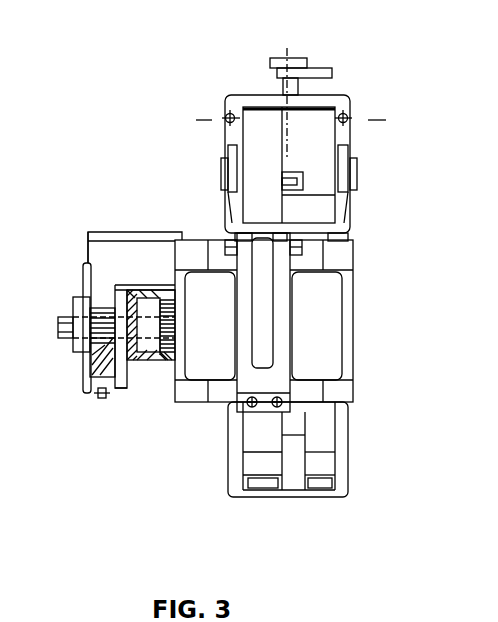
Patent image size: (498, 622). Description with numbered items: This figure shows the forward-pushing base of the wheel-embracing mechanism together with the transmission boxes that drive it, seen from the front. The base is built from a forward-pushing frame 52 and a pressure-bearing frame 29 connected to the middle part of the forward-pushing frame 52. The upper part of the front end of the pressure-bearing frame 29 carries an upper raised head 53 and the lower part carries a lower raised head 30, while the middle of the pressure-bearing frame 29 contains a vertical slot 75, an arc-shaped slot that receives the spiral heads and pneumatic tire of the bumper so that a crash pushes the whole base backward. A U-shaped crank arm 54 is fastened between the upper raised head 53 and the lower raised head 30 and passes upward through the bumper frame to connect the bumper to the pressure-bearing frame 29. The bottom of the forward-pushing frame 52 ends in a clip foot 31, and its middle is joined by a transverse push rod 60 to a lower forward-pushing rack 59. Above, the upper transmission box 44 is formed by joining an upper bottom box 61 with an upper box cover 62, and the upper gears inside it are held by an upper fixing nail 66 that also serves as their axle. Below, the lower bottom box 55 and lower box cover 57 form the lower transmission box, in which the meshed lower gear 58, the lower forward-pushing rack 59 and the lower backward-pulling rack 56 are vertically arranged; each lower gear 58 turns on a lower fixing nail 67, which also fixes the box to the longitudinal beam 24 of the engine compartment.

The upper transmission box 44 is at (258, 95).
The upper fixing nail 66 is at (298, 63).
The upper box cover 62 is at (345, 100).
The upper bottom box 61 is at (343, 138).
The forward-pushing frame 52 is at (323, 208).
The pressure-bearing frame 29 is at (348, 284).
The vertical slot 75 is at (303, 352).
The U-shaped crank arm 54 is at (245, 337).
The upper raised head 53 is at (262, 253).
The lower raised head 30 is at (303, 392).
The clip foot 31 is at (287, 487).
The transverse push rod 60 is at (153, 262).
The lower forward-pushing rack 59 is at (85, 258).
The lower gear 58 is at (110, 305).
The lower fixing nail 67 is at (135, 290).
The lower box cover 57 is at (83, 373).
The lower backward-pulling rack 56 is at (95, 385).
The lower bottom box 55 is at (125, 365).
The longitudinal beam 24 is at (152, 358).